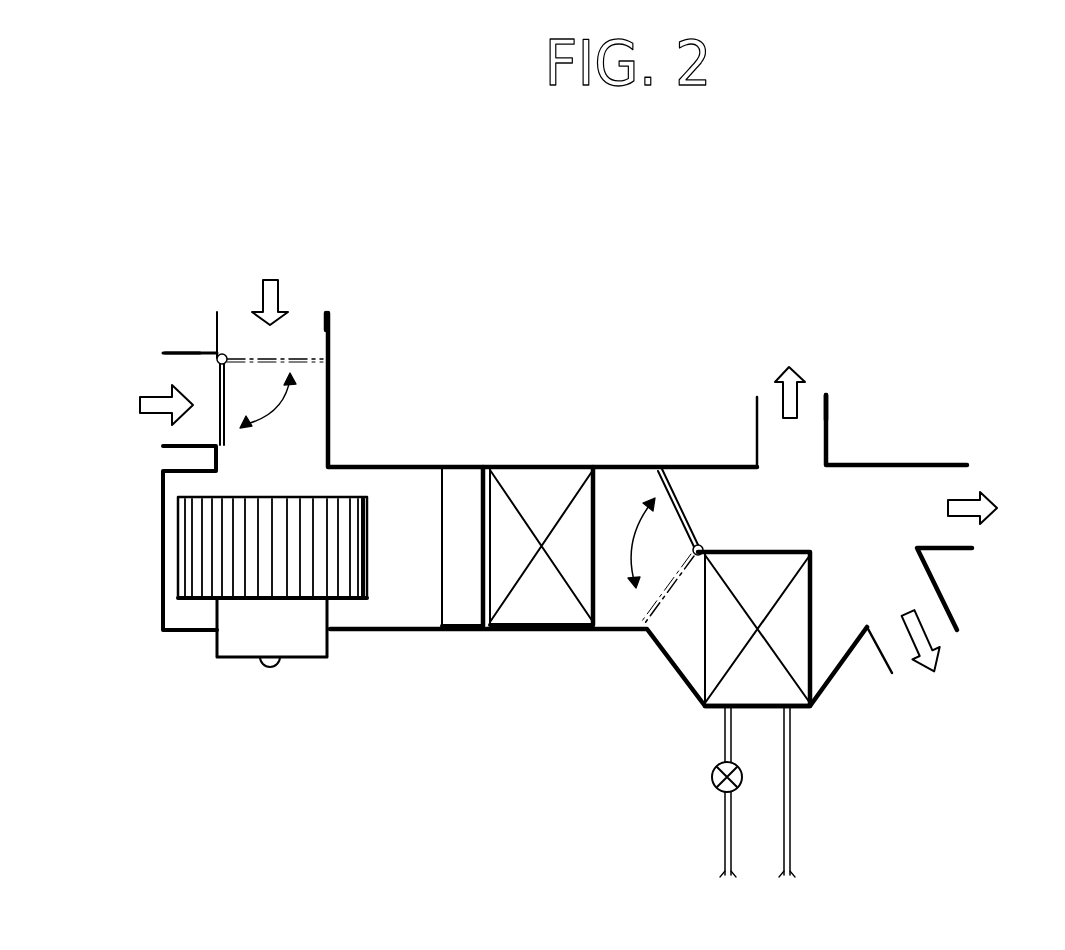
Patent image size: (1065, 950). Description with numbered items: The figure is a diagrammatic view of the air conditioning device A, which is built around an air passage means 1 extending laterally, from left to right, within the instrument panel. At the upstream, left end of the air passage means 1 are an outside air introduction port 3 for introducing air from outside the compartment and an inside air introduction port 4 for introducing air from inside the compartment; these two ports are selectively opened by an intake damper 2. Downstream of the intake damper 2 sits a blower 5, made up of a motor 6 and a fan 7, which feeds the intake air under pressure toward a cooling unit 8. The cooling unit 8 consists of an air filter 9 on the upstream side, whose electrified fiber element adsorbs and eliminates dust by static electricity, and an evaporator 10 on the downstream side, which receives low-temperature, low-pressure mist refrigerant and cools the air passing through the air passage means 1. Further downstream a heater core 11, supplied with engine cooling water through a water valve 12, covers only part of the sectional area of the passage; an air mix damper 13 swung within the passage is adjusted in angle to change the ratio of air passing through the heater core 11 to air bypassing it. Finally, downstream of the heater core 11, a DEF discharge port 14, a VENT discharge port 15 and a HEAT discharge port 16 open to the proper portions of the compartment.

The air passage means 1 is at (400, 466).
The air conditioning device A is at (568, 392).
The intake damper 2 is at (232, 434).
The outside air introduction port 3 is at (326, 323).
The inside air introduction port 4 is at (173, 354).
The blower 5 is at (85, 592).
The motor 6 is at (220, 643).
The fan 7 is at (183, 563).
The cooling unit 8 is at (447, 708).
The air filter 9 is at (455, 630).
The evaporator 10 is at (548, 630).
The heater core 11 is at (798, 603).
The water valve 12 is at (714, 779).
The air mix damper 13 is at (686, 505).
The DEF discharge port 14 is at (823, 416).
The VENT discharge port 15 is at (957, 466).
The HEAT discharge port 16 is at (947, 628).